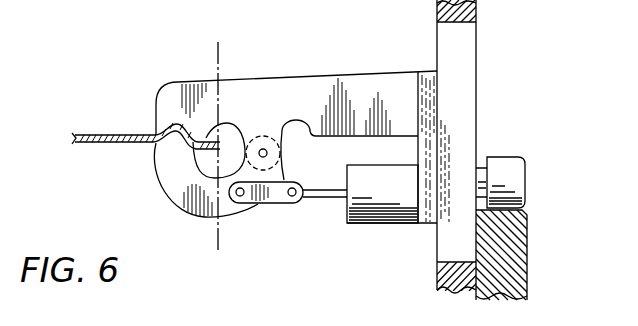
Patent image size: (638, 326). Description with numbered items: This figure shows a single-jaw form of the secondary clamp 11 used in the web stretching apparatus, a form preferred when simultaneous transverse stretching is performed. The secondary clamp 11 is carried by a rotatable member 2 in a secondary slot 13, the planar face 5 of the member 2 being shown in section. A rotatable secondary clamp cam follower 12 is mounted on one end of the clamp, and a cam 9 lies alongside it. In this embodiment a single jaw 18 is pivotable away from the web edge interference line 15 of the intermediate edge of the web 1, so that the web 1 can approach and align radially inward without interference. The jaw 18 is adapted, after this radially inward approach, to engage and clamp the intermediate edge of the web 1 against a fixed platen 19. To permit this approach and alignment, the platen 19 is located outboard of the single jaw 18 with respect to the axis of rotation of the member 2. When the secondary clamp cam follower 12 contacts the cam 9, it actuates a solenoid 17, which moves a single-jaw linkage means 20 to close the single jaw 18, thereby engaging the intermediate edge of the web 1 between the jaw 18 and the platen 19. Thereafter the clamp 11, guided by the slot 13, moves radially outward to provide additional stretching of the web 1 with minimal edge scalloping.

The web 1 is at (115, 137).
The rotatable member 2 is at (480, 16).
The face 5 is at (437, 276).
The cam 9 is at (527, 243).
The secondary clamp 11 is at (320, 73).
The secondary clamp cam follower 12 is at (508, 164).
The secondary slot 13 is at (445, 240).
The interference line 15 is at (218, 53).
The solenoid 17 is at (408, 194).
The single jaw 18 is at (168, 163).
The fixed platen 19 is at (162, 110).
The single-jaw linkage means 20 is at (280, 201).